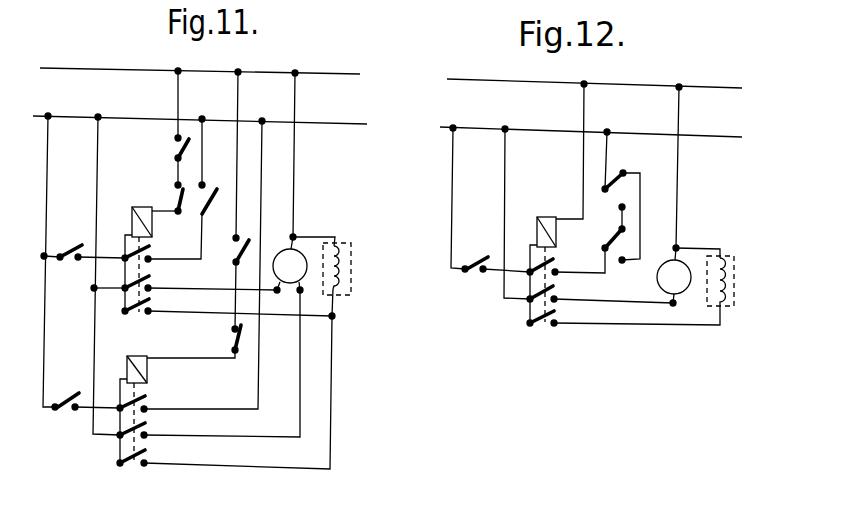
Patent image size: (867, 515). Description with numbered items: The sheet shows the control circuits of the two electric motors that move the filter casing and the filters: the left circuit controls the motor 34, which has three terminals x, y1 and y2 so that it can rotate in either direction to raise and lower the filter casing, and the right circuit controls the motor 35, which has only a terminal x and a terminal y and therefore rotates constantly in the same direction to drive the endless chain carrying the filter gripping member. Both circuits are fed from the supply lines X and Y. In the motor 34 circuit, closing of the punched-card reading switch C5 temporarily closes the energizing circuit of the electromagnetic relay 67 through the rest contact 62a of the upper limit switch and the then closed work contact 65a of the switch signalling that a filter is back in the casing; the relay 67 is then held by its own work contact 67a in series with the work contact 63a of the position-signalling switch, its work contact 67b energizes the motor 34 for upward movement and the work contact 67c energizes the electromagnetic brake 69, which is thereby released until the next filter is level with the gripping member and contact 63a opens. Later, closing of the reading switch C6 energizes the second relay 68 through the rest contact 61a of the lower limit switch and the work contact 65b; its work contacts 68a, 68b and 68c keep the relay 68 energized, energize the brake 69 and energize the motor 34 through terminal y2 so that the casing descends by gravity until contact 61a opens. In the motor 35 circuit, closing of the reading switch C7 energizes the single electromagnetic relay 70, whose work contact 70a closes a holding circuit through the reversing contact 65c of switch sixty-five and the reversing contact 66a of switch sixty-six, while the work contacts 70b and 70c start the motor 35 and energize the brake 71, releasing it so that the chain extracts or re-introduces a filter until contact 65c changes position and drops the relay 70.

In FIG. 11, the supply line X is at (206, 73).
In FIG. 12, the supply line X is at (602, 90).
In FIG. 11, the supply line Y is at (205, 124).
In FIG. 12, the supply line Y is at (597, 136).
In FIG. 11, the work contact of switch 65 65a is at (176, 145).
In FIG. 11, the rest contact of switch 62 62a is at (177, 196).
In FIG. 11, the work contact of switch 63 63a is at (209, 191).
In FIG. 11, the electromagnetic relay 67 is at (131, 212).
In FIG. 11, the switch of the reading system C5 is at (72, 250).
In FIG. 11, the work contact of relay 67 67a is at (155, 245).
In FIG. 11, the work contact of relay 67 67b is at (150, 279).
In FIG. 11, the work contact of relay 67 67c is at (150, 302).
In FIG. 11, the electric motor 34 is at (273, 264).
In FIG. 11, the work contact of switch 65 65b is at (251, 237).
In FIG. 11, the motor terminal x is at (298, 228).
In FIG. 12, the motor terminal x is at (685, 236).
In FIG. 11, the electromagnetic brake 69 is at (351, 286).
In FIG. 11, the motor terminal y1 is at (273, 300).
In FIG. 11, the motor terminal y2 is at (310, 300).
In FIG. 11, the rest contact of lower limit switch 61 61a is at (234, 337).
In FIG. 11, the electromagnetic relay 68 is at (133, 356).
In FIG. 11, the switch of the reading system C6 is at (72, 398).
In FIG. 11, the work contact of relay 68 68a is at (146, 398).
In FIG. 11, the work contact of relay 68 68b is at (146, 424).
In FIG. 11, the work contact of relay 68 68c is at (146, 451).
In FIG. 12, the switch of the reading system C7 is at (475, 263).
In FIG. 12, the electromagnetic relay 70 is at (547, 217).
In FIG. 12, the work contact of relay 70 70a is at (555, 261).
In FIG. 12, the work contact of relay 70 70b is at (554, 289).
In FIG. 12, the work contact of relay 70 70c is at (550, 325).
In FIG. 12, the reversing contact of switch 66 66a is at (612, 177).
In FIG. 12, the reversing contact of switch 65 65c is at (603, 233).
In FIG. 12, the electric motor 35 is at (667, 266).
In FIG. 12, the motor terminal y is at (680, 312).
In FIG. 12, the electromagnetic brake 71 is at (734, 306).